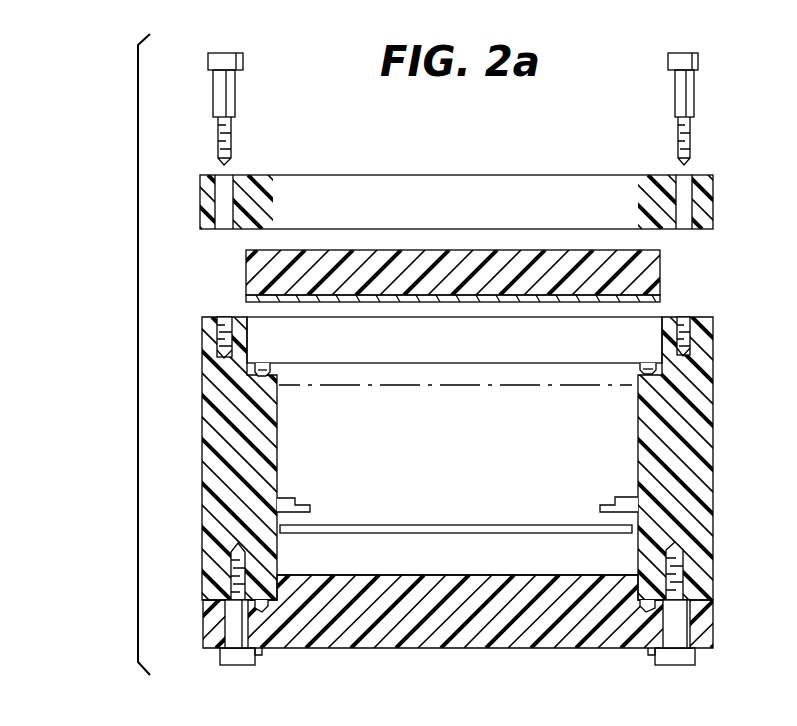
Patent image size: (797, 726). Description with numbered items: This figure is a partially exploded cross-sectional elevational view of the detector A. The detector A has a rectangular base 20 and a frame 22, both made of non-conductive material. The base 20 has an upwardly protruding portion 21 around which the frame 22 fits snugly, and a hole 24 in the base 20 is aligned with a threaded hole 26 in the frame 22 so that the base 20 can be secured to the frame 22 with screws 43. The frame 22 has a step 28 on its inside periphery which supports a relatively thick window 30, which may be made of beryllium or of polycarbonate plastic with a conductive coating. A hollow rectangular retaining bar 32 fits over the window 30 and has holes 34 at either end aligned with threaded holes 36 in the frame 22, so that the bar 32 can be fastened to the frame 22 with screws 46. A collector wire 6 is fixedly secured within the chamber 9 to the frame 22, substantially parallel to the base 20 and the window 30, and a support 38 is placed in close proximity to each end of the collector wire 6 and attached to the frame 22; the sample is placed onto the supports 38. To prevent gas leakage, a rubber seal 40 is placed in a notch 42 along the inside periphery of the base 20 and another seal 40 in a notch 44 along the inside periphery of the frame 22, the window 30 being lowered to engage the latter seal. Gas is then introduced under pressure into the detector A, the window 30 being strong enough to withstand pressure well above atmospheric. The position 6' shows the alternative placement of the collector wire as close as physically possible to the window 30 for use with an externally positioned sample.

The detector A is at (108, 388).
The screws 46 is at (243, 57).
The holes 34 is at (231, 188).
The hollow rectangular bar 32 is at (714, 204).
The window 30 is at (653, 275).
The threaded holes 36 is at (229, 318).
The seal 40 is at (259, 366).
The notch 44 is at (266, 373).
The step 28 is at (284, 378).
The frame 22 is at (206, 485).
The support 38 is at (288, 499).
The threaded hole 26 is at (229, 580).
The hole 24 is at (233, 622).
The screws 43 is at (233, 666).
The notch 42 is at (263, 603).
The base 20 is at (410, 650).
The upwardly protruding portion 21 is at (470, 584).
The collector wire 6 is at (456, 507).
The chamber 9 is at (446, 434).
The collector wire position 6' is at (550, 414).